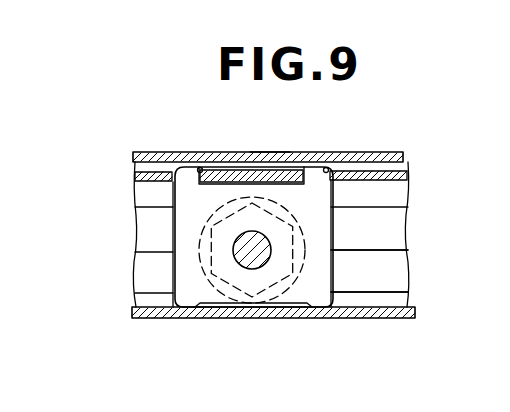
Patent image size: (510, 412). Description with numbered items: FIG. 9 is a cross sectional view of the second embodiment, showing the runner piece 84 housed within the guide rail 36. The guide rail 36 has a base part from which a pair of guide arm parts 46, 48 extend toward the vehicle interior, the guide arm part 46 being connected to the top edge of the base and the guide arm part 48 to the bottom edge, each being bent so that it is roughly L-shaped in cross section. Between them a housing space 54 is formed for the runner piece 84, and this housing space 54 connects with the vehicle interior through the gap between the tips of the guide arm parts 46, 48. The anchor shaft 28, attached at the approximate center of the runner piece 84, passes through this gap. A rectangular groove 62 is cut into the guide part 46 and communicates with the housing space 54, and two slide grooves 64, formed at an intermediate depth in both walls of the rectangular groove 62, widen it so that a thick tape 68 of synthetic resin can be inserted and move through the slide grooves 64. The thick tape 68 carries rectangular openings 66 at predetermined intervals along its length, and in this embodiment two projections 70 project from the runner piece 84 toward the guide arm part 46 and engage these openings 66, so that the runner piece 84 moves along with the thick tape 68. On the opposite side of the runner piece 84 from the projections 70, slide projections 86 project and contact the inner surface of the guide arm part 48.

The anchor shaft 28 is at (233, 250).
The guide rail 36 is at (367, 148).
The guide arm part 46 is at (268, 152).
The guide arm part 48 is at (283, 318).
The housing space 54 is at (385, 243).
The rectangular groove 62 is at (165, 170).
The slide grooves 64 is at (142, 175).
The rectangular openings 66 is at (203, 169).
The thick tape 68 is at (394, 170).
The projections 70 is at (190, 172).
The runner piece 84 is at (333, 272).
The slide projections 86 is at (172, 308).